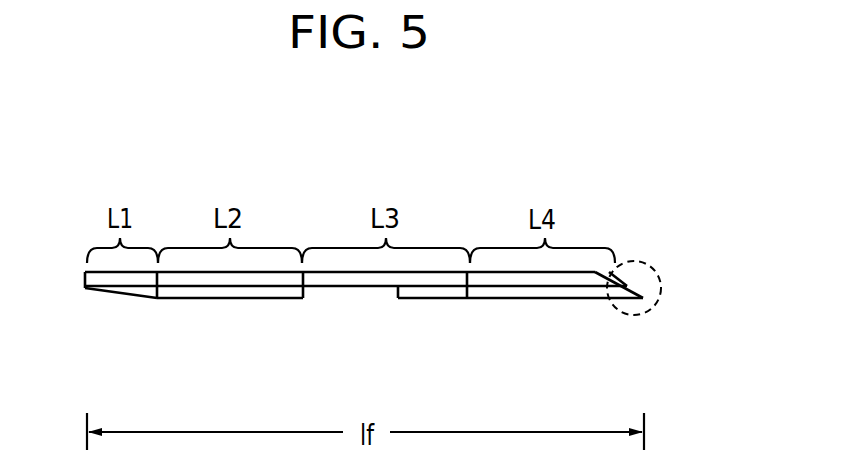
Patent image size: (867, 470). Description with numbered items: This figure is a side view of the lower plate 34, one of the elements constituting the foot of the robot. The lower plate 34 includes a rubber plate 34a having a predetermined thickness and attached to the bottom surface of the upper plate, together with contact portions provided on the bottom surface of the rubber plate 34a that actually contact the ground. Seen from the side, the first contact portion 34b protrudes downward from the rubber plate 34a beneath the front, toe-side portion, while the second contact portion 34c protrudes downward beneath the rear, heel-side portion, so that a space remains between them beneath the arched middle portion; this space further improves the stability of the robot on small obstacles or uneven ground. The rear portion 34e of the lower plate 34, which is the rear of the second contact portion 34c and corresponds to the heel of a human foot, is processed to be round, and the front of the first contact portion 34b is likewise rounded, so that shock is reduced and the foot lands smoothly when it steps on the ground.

The lower plate 34 is at (394, 272).
The rubber plate 34a is at (350, 287).
The first contact portion 34b is at (227, 290).
The second contact portion 34c is at (545, 291).
The rear portion 34e is at (630, 317).